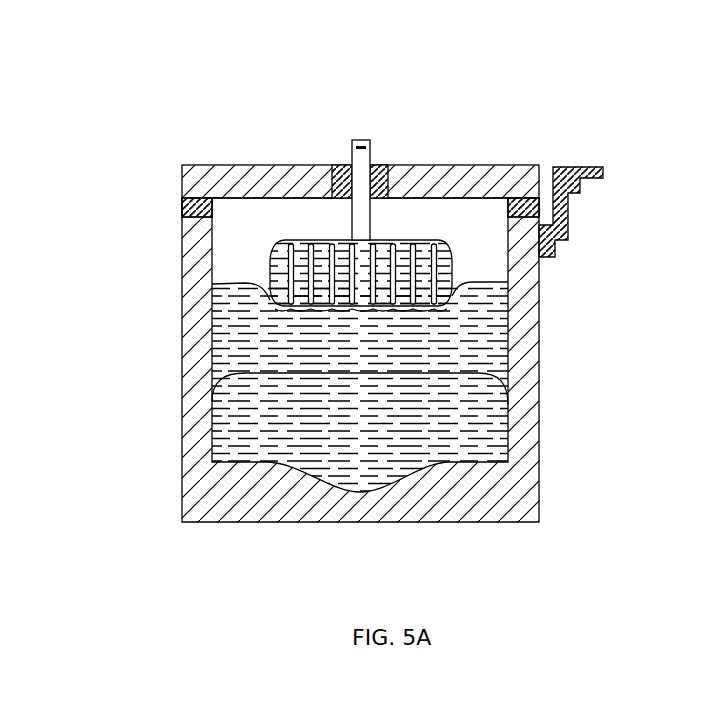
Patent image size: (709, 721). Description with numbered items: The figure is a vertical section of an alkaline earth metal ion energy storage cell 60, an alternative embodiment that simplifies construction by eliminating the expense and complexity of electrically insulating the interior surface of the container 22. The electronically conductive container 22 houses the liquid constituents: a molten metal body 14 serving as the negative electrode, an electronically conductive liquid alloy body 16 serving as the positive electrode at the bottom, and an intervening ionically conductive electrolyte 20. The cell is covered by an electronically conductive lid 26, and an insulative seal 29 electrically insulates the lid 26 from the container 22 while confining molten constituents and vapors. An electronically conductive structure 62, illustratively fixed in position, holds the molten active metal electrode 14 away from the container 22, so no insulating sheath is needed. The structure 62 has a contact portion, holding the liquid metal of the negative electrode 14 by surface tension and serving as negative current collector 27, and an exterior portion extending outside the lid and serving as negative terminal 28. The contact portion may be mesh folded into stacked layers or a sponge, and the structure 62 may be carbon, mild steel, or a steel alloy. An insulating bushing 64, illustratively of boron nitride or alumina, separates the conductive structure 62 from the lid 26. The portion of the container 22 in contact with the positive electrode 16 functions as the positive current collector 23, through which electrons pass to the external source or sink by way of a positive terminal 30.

The alkaline earth metal ion energy storage cell 60 is at (118, 87).
The lid 26 is at (258, 170).
The insulative seal 29 is at (182, 204).
The negative terminal 28 is at (350, 140).
The electronically conductive structure 62 is at (362, 228).
The insulating bushing 64 is at (345, 166).
The positive terminal 30 is at (568, 166).
The molten metal body 14 is at (265, 268).
The negative current collector 27 is at (440, 246).
The electrolyte 20 is at (244, 344).
The liquid alloy body 16 is at (250, 420).
The container 22 is at (517, 493).
The positive current collector 23 is at (364, 492).